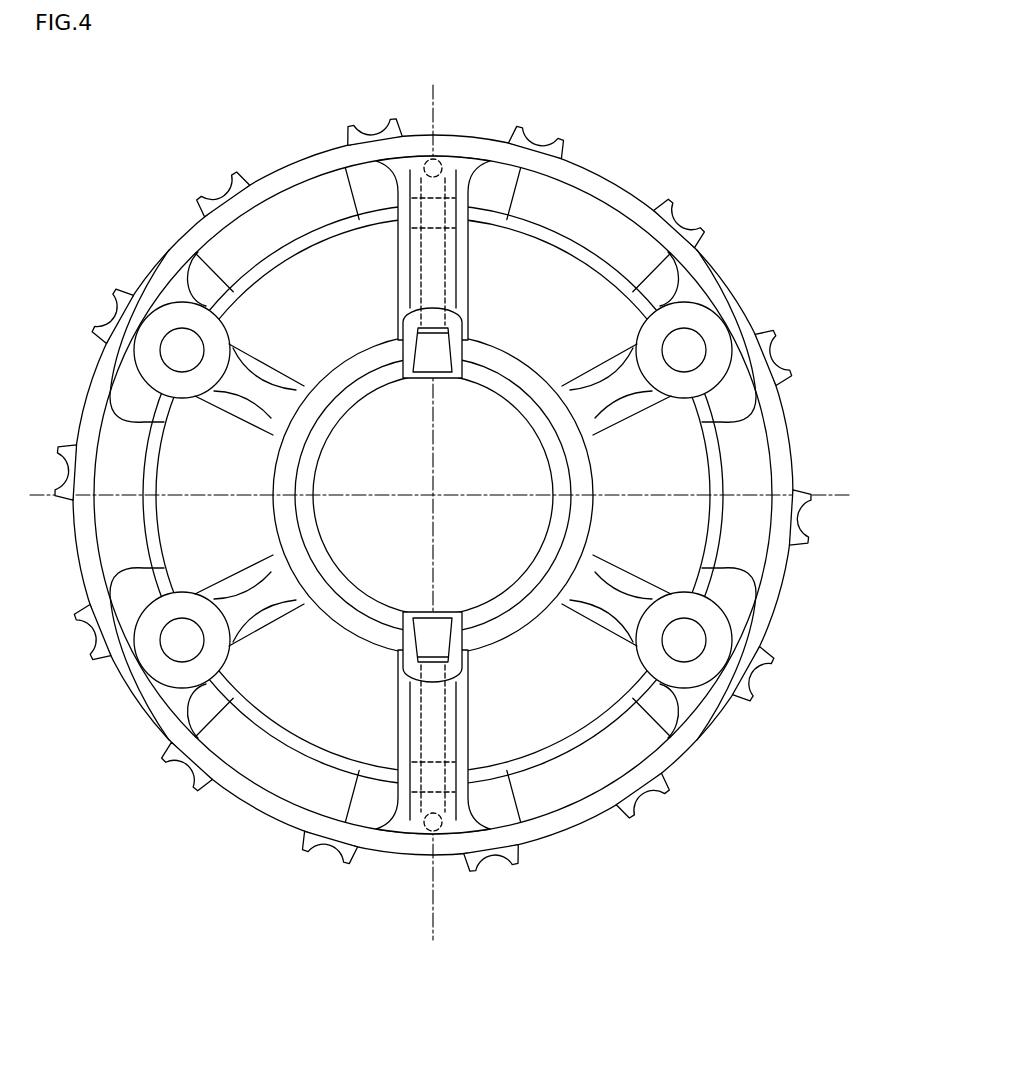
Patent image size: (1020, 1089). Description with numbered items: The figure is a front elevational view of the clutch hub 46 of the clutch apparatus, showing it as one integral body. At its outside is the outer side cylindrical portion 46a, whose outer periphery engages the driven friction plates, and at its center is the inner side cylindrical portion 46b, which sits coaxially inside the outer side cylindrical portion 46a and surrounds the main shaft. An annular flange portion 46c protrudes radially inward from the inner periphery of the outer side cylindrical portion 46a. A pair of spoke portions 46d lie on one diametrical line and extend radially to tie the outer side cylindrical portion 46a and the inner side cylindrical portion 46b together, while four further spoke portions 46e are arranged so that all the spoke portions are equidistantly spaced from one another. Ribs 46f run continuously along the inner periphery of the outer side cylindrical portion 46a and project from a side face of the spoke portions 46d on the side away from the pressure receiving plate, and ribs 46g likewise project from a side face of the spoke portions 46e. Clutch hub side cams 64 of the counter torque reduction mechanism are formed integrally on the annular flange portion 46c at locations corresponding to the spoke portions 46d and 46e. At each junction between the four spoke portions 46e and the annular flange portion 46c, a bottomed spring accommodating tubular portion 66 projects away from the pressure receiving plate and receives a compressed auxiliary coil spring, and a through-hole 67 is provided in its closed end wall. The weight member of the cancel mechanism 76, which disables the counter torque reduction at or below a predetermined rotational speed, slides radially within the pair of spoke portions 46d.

The clutch hub 46 is at (283, 156).
The outer side cylindrical portion 46a is at (594, 182).
The inner side cylindrical portion 46b is at (323, 563).
The annular flange portion 46c is at (288, 232).
The spoke portions 46d is at (462, 302).
The spoke portions 46e is at (257, 367).
The ribs 46f is at (397, 745).
The ribs 46g is at (250, 392).
The clutch hub side cams 64 is at (497, 178).
The spring accommodating tubular portion 66 is at (212, 338).
The through-hole 67 is at (182, 330).
The cancel mechanism 76 is at (462, 246).